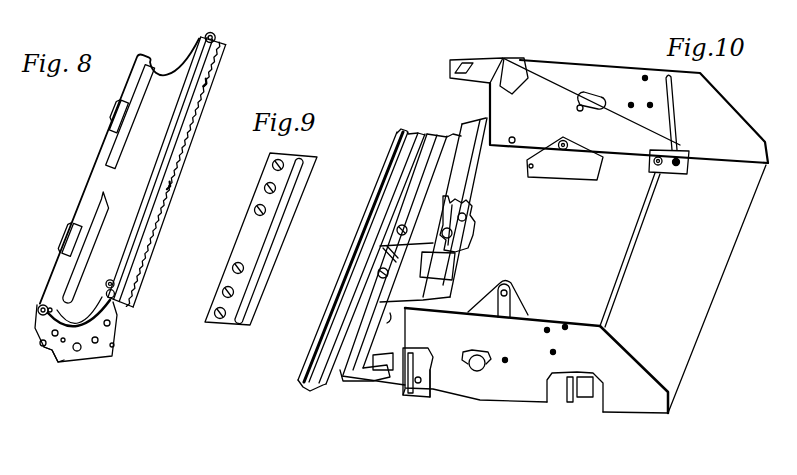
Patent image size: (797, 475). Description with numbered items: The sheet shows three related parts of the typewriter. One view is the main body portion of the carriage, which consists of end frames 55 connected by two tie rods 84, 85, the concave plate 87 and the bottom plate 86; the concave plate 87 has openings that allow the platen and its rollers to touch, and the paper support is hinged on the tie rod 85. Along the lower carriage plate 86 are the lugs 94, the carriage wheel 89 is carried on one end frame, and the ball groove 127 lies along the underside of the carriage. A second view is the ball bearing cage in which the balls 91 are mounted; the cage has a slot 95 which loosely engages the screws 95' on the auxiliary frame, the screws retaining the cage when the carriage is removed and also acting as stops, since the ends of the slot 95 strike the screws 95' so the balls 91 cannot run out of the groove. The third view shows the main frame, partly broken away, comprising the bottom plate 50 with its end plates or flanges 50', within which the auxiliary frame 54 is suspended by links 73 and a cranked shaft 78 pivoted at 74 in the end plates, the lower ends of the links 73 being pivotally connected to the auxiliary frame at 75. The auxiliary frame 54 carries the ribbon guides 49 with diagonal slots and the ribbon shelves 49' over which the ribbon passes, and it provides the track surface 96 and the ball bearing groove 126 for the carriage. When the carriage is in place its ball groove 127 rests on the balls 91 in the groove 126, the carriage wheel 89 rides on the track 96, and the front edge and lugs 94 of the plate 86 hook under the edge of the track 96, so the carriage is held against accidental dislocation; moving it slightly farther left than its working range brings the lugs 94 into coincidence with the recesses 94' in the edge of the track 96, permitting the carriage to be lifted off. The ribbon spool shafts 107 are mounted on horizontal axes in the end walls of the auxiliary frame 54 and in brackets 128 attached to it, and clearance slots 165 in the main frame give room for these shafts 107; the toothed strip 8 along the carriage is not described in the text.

In FIG. 8, the toothed strip 8 is at (221, 63).
In FIG. 10, the ribbon guide 49 is at (441, 162).
In FIG. 10, the ribbon shelf 49' is at (475, 169).
In FIG. 10, the bottom plate 50 is at (554, 289).
In FIG. 10, the end plate or flange 50' is at (626, 225).
In FIG. 10, the auxiliary frame 54 is at (563, 136).
In FIG. 8, the end frame 55 is at (147, 54).
In FIG. 10, the link 73 is at (430, 378).
In FIG. 10, the pivot 74 is at (523, 60).
In FIG. 10, the pivotal connection 75 is at (404, 389).
In FIG. 10, the cranked shaft 78 is at (632, 248).
In FIG. 8, the tie rod 84 is at (216, 42).
In FIG. 8, the tie rod 85 is at (117, 114).
In FIG. 8, the bottom plate 86 is at (100, 360).
In FIG. 8, the concave plate 87 is at (98, 246).
In FIG. 8, the carriage wheel 89 is at (168, 207).
In FIG. 9, the ball 91 is at (221, 316).
In FIG. 8, the lug 94 is at (207, 135).
In FIG. 10, the recess 94' is at (400, 257).
In FIG. 9, the slot 95 is at (266, 239).
In FIG. 10, the screw 95' is at (365, 251).
In FIG. 10, the track surface 96 is at (433, 210).
In FIG. 10, the ribbon spool shaft 107 is at (508, 297).
In FIG. 10, the ball bearing groove 126 is at (305, 388).
In FIG. 8, the ball groove 127 is at (48, 362).
In FIG. 10, the bracket 128 is at (522, 308).
In FIG. 10, the clearance slot 165 is at (490, 354).